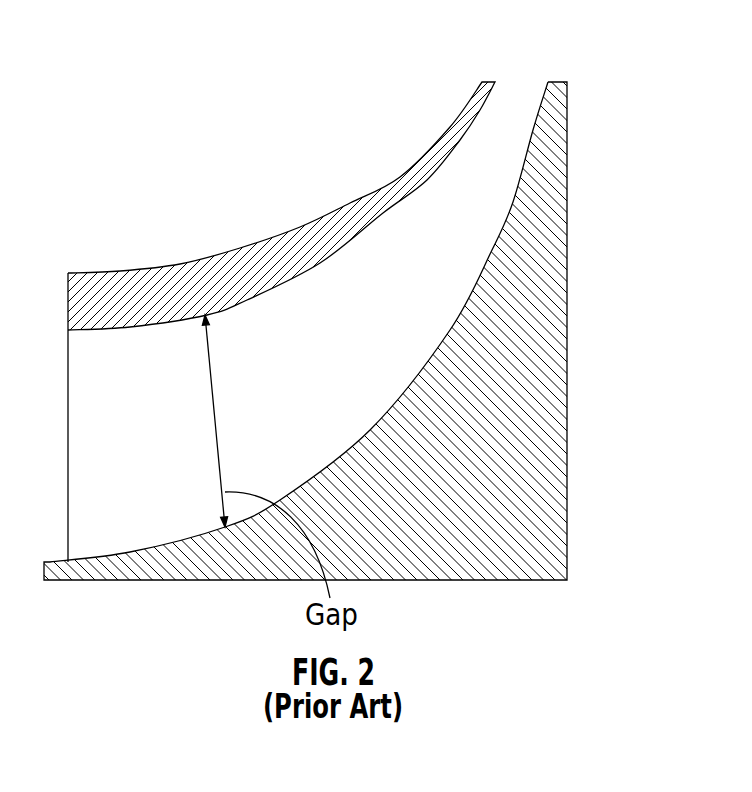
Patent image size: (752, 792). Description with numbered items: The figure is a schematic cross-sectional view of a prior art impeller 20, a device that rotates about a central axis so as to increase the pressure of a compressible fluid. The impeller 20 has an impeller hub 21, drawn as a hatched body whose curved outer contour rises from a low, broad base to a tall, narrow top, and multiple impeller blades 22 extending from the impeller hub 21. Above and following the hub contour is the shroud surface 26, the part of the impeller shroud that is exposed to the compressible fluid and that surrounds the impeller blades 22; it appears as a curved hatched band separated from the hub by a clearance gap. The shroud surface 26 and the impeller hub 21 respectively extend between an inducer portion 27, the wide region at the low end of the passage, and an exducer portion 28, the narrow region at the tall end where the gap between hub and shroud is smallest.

The impeller 20 is at (376, 396).
The impeller hub 21 is at (535, 298).
The impeller blades 22 is at (472, 212).
The shroud surface 26 is at (418, 185).
The inducer portion 27 is at (160, 398).
The exducer portion 28 is at (523, 138).